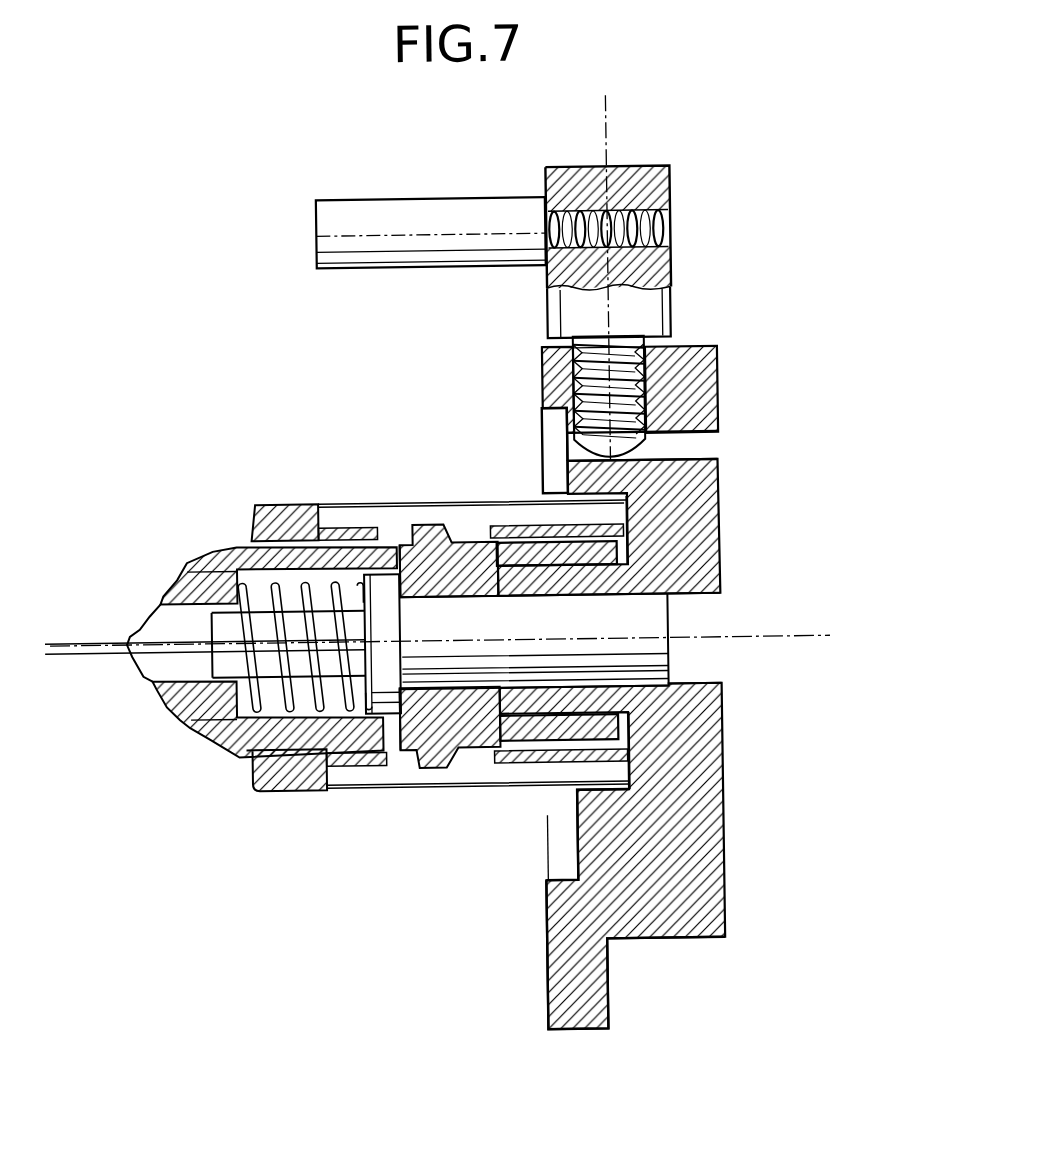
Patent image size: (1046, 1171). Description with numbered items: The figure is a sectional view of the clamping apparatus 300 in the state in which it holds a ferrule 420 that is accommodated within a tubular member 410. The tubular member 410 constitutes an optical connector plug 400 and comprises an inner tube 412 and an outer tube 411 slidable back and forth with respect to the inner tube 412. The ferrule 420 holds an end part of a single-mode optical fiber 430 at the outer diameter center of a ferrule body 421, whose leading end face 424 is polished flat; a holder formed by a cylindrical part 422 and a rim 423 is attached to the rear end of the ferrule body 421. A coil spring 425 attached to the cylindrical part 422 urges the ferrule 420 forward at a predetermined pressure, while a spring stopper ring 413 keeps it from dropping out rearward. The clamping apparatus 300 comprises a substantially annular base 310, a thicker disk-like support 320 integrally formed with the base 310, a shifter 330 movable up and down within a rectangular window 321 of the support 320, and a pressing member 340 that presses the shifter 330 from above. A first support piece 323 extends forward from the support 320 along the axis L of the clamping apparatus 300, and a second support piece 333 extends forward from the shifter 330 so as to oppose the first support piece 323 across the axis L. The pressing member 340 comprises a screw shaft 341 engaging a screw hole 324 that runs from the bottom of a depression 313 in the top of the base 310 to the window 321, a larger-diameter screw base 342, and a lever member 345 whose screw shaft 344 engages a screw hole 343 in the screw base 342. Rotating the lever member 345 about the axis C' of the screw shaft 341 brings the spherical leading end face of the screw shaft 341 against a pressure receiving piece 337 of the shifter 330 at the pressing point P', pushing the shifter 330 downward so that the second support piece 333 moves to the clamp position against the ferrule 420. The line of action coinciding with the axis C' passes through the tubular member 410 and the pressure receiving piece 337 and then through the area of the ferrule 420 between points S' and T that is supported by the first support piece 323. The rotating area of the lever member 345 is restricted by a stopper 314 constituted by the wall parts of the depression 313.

The clamping apparatus 300 is at (766, 354).
The base 310 is at (544, 965).
The depression 313 is at (553, 393).
The stopper 314 is at (551, 288).
The support 320 is at (568, 842).
The rectangular window 321 is at (720, 444).
The first support piece 323 is at (481, 711).
The screw hole 324 is at (651, 347).
The shifter 330 is at (723, 525).
The second support piece 333 is at (531, 576).
The pressure receiving piece 337 is at (544, 431).
The pressing member 340 is at (542, 204).
The screw shaft 341 is at (577, 388).
The screw base 342 is at (677, 170).
The screw hole 343 is at (676, 224).
The screw shaft 344 is at (563, 211).
The lever member 345 is at (376, 217).
The optical connector plug 400 is at (215, 488).
The tubular member 410 is at (284, 496).
The outer tube 411 is at (315, 524).
The inner tube 412 is at (390, 543).
The spring stopper ring 413 is at (198, 578).
The ferrule 420 is at (457, 665).
The ferrule body 421 is at (668, 658).
The cylindrical part 422 is at (213, 658).
The rim 423 is at (381, 695).
The leading end face 424 is at (687, 614).
The coil spring 425 is at (260, 696).
The optical fiber 430 is at (102, 650).
The axis of the screw shaft C' is at (646, 277).
The pressing point P' is at (702, 470).
The axis of the clamping apparatus L is at (775, 638).
The point S' is at (724, 702).
The point T is at (468, 773).